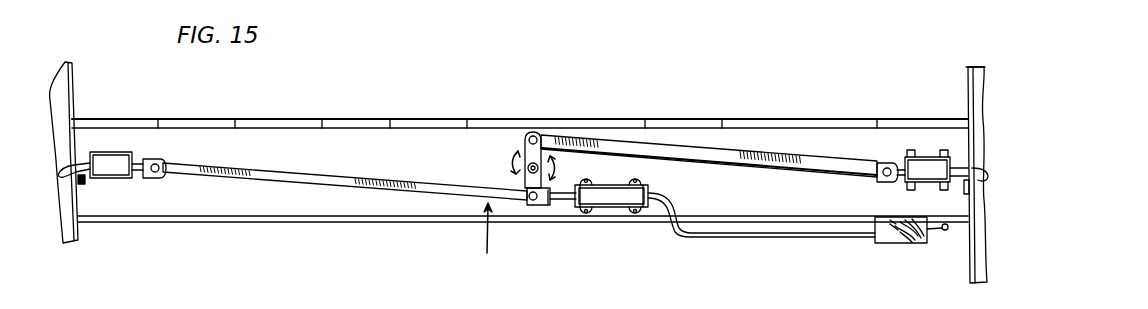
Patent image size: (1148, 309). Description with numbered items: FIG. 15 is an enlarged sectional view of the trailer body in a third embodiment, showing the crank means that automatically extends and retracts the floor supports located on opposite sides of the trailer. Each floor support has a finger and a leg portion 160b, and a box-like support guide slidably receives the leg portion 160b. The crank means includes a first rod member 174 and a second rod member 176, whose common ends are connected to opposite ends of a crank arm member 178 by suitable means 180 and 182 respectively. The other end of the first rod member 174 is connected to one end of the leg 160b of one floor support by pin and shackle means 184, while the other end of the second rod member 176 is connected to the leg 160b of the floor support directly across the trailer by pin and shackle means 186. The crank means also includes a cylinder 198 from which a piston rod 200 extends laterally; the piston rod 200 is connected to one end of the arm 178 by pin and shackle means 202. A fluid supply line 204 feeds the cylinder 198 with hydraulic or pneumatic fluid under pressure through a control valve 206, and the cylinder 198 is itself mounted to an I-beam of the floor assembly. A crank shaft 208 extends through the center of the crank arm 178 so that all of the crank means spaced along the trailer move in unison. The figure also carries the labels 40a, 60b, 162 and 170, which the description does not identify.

The frame rail 40a is at (850, 126).
The leg portion 160b is at (963, 163).
The cable 60b is at (83, 165).
The pin and shackle means 184 is at (157, 160).
The first rod member 174 is at (337, 178).
The second rod member 176 is at (735, 150).
The link 162 is at (613, 140).
The connecting means 180 is at (528, 133).
The crank arm member 178 is at (543, 142).
The connecting means 182 is at (530, 233).
The pin and shackle means 202 is at (555, 258).
The piston rod 200 is at (560, 190).
The cylinder 198 is at (610, 237).
The fluid supply line 204 is at (800, 258).
The pin and shackle means 186 is at (857, 258).
The control valve 206 is at (913, 243).
The crank shaft 208 is at (512, 170).
The direction arrow 170 is at (480, 281).